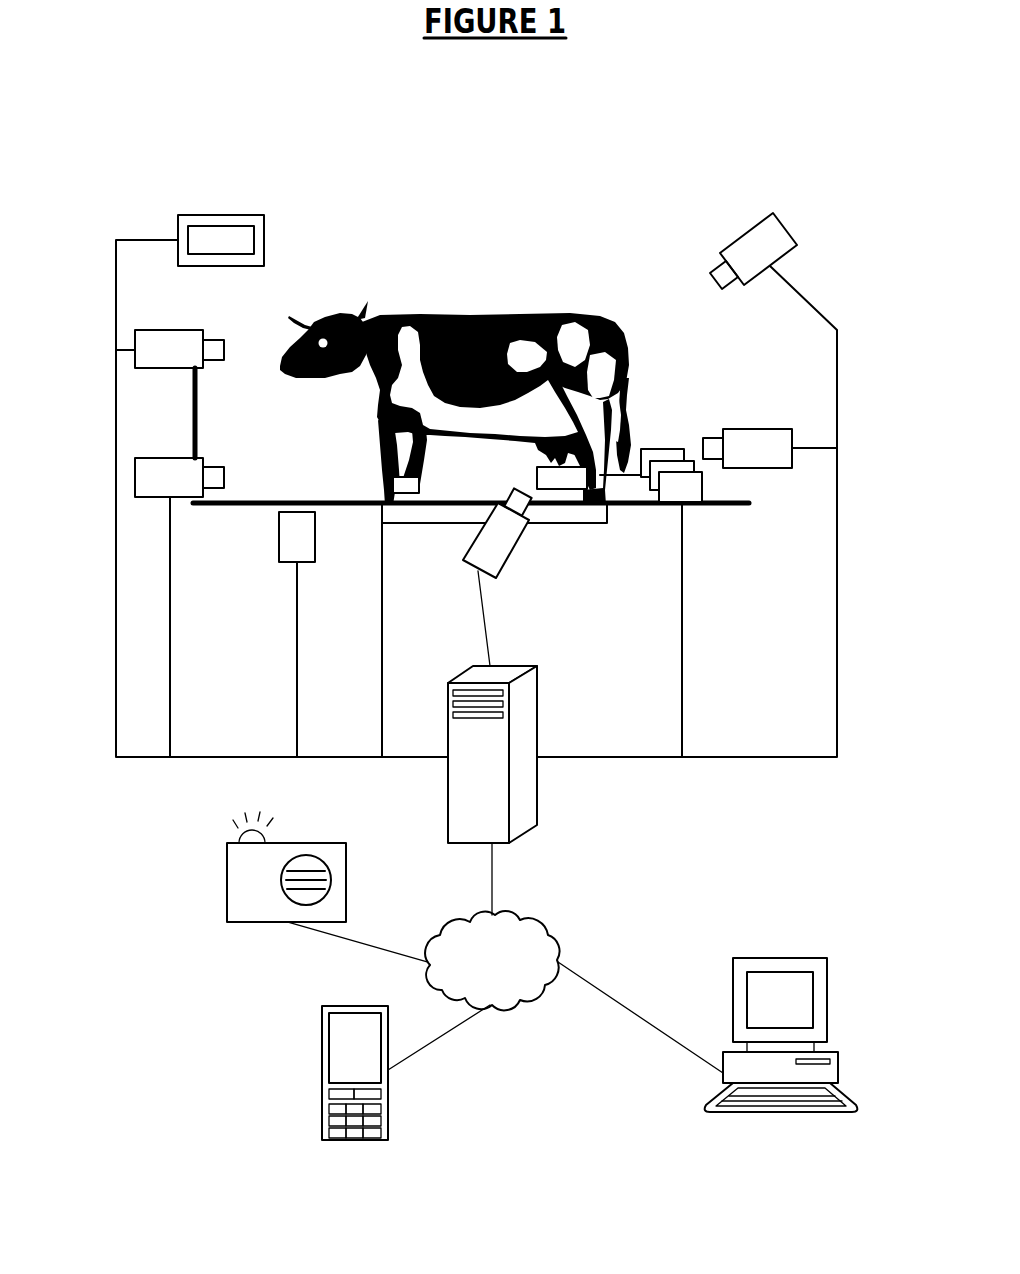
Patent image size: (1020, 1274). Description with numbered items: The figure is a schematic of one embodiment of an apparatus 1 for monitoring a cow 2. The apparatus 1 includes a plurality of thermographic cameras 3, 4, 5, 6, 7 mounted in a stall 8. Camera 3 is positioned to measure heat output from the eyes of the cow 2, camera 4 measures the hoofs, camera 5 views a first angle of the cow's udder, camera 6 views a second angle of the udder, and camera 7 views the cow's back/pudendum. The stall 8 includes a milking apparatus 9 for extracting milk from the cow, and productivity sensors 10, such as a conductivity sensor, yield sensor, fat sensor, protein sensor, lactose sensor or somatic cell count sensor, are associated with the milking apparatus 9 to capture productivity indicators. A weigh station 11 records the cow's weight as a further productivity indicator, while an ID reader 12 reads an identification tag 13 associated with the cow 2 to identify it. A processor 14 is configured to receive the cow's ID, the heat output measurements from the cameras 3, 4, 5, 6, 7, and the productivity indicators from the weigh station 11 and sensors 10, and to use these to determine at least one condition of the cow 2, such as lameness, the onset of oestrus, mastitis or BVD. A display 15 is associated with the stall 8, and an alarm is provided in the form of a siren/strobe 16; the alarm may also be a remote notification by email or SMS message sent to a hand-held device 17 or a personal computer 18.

The apparatus 1 is at (266, 157).
The cow 2 is at (496, 315).
The thermographic camera 3 is at (192, 328).
The thermographic camera 4 is at (178, 498).
The thermographic camera 5 is at (497, 577).
The thermographic camera 6 is at (762, 427).
The thermographic camera 7 is at (750, 230).
The stall 8 is at (733, 506).
The milking apparatus 9 is at (535, 478).
The productivity sensors 10 is at (672, 506).
The weigh station 11 is at (537, 523).
The ID reader 12 is at (287, 565).
The identification tag 13 is at (391, 478).
The processor 14 is at (538, 800).
The display 15 is at (266, 219).
The siren/strobe 16 is at (225, 853).
The hand-held device 17 is at (318, 1112).
The personal computer 18 is at (787, 961).